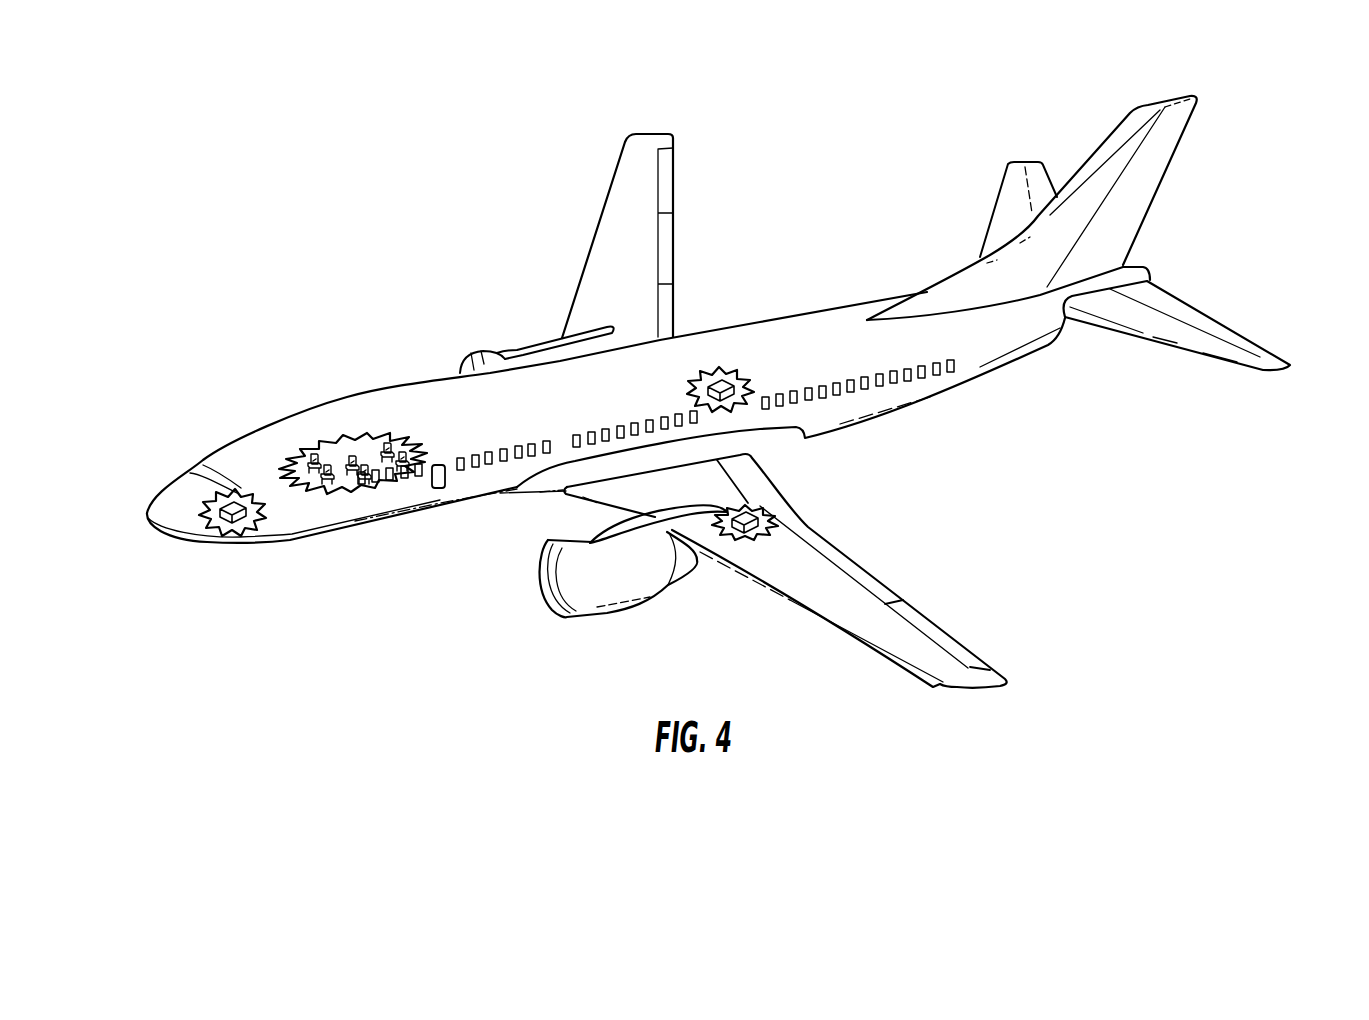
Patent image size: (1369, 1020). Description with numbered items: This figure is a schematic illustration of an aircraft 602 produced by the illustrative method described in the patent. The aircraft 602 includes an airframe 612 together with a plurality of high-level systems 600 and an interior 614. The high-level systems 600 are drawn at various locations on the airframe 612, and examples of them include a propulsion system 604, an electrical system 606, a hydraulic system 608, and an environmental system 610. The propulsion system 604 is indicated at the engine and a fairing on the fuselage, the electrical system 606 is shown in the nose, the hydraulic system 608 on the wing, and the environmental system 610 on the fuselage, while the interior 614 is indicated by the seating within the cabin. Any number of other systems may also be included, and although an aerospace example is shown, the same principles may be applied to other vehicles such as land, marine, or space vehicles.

The high-level systems 600 is at (1006, 507).
The aircraft 602 is at (316, 280).
The propulsion system 604 is at (497, 360).
The electrical system 606 is at (238, 491).
The hydraulic system 608 is at (762, 507).
The environmental system 610 is at (718, 377).
The airframe 612 is at (344, 388).
The interior 614 is at (337, 474).